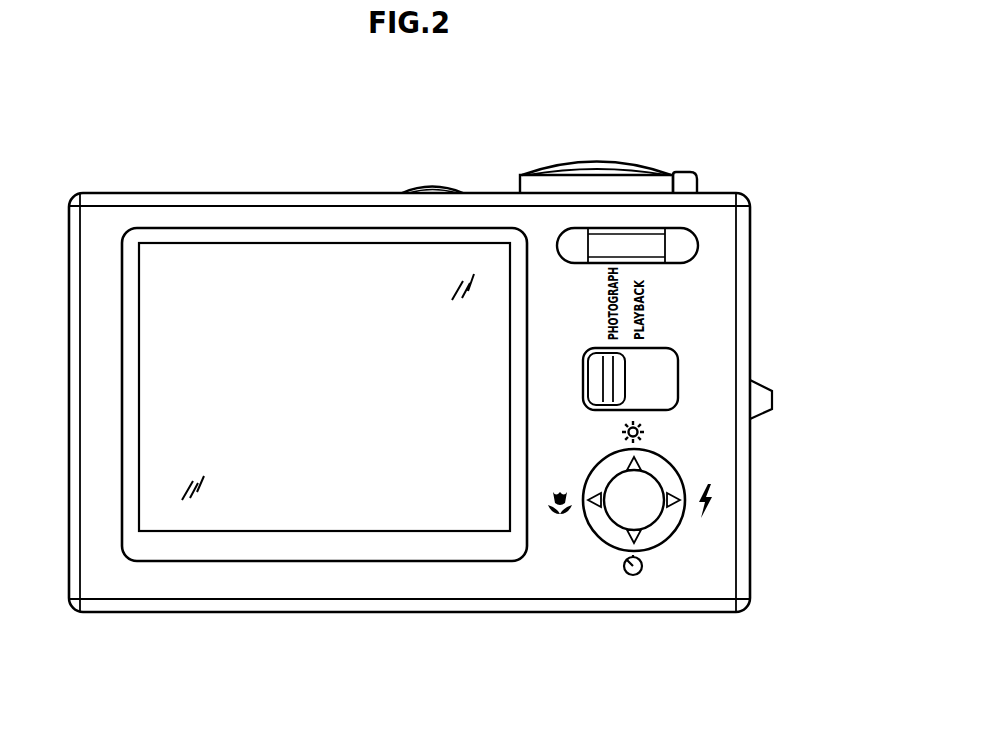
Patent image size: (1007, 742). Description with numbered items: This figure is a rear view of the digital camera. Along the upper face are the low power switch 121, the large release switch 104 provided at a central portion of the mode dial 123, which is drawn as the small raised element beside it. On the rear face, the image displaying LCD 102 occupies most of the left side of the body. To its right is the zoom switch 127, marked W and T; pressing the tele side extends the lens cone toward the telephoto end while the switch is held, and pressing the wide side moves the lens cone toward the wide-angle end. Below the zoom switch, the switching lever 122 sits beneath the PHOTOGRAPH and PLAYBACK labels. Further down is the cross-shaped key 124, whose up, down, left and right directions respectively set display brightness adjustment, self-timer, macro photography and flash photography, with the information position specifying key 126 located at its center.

The image displaying LCD 102 is at (323, 552).
The release switch 104 is at (596, 163).
The power switch 121 is at (433, 188).
The mode dial 123 is at (683, 178).
The zoom switch 127 is at (698, 244).
The switching lever 122 is at (678, 369).
The information position specifying key 126 is at (648, 484).
The cross-shaped key 124 is at (665, 535).